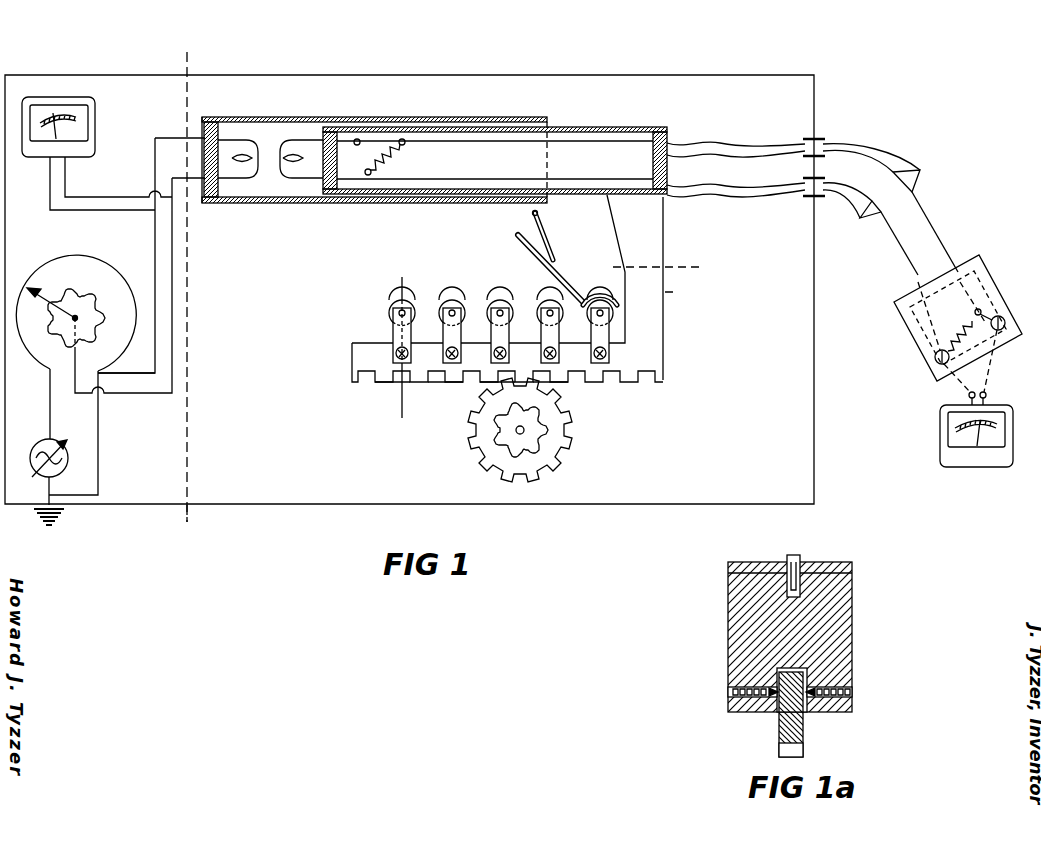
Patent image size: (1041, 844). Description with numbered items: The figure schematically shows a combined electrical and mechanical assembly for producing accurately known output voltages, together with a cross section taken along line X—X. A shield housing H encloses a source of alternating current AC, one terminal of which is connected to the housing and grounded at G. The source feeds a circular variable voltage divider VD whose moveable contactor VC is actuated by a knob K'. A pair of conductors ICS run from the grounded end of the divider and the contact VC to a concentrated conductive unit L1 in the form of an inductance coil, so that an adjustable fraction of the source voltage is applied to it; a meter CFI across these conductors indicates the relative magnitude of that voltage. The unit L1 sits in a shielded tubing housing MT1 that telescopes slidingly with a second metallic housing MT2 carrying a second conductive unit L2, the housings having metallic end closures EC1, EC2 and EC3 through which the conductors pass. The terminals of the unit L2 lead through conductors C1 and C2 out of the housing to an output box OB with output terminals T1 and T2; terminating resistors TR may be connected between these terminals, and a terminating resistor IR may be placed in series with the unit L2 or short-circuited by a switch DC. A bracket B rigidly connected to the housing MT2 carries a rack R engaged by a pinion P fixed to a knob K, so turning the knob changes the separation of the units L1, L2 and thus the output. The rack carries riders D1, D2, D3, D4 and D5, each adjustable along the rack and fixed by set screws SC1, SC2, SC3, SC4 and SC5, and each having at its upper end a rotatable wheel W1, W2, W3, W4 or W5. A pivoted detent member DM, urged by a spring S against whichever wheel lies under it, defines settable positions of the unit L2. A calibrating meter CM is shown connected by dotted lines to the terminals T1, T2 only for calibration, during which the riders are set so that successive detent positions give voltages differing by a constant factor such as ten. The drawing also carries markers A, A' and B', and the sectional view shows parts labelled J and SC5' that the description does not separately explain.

In FIG. 1, the shield housing H is at (352, 77).
In FIG. 1, the section line A is at (197, 283).
In FIG. 1, the section line A' is at (194, 519).
In FIG. 1, the meter CFI is at (42, 97).
In FIG. 1, the pair of conductors ICS is at (172, 229).
In FIG. 1, the variable voltage divider VD is at (75, 257).
In FIG. 1, the moveable contactor VC is at (74, 305).
In FIG. 1, the knob K' is at (78, 303).
In FIG. 1, the source of alternating current AC is at (37, 445).
In FIG. 1, the ground G is at (58, 513).
In FIG. 1, the shielded conductive housing MT1 is at (486, 118).
In FIG. 1, the metallic housing MT2 is at (592, 128).
In FIG. 1, the metallic end closure EC1 is at (203, 121).
In FIG. 1, the metallic end closure EC2 is at (343, 191).
In FIG. 1, the metallic end closure EC3 is at (670, 196).
In FIG. 1, the concentrated electrically conductive unit L1 is at (262, 186).
In FIG. 1, the second concentrated electrically conductive unit L2 is at (275, 186).
In FIG. 1, the switch DC is at (360, 154).
In FIG. 1, the terminating resistor IR is at (389, 157).
In FIG. 1, the spring S is at (547, 230).
In FIG. 1, the detent member DM is at (600, 293).
In FIG. 1, the bracket B is at (635, 288).
In FIG. 1, the bar section line B' is at (659, 258).
In FIG. 1, the rotatable wheel W1 is at (613, 314).
In FIG. 1A, the rotatable wheel W1 is at (801, 562).
In FIG. 1, the rotatable wheel W2 is at (548, 301).
In FIG. 1, the rotatable wheel W3 is at (494, 301).
In FIG. 1, the rotatable wheel W4 is at (448, 301).
In FIG. 1, the rotatable wheel W5 is at (393, 304).
In FIG. 1, the rider D1 is at (591, 337).
In FIG. 1A, the rider D1 is at (852, 634).
In FIG. 1, the rider D2 is at (541, 337).
In FIG. 1, the rider D3 is at (491, 337).
In FIG. 1, the rider D4 is at (443, 337).
In FIG. 1, the rider D5 is at (393, 337).
In FIG. 1, the set screw SC1 is at (603, 365).
In FIG. 1, the set screw SC2 is at (557, 365).
In FIG. 1, the set screw SC3 is at (493, 365).
In FIG. 1, the set screw SC4 is at (443, 365).
In FIG. 1, the set screw SC5 is at (355, 391).
In FIG. 1A, the set screw SC5 is at (858, 696).
In FIG. 1A, the spring contact 5 prime SC5' is at (714, 696).
In FIG. 1, the section line X— X is at (402, 346).
In FIG. 1, the pinion P is at (572, 448).
In FIG. 1, the knob K is at (503, 450).
In FIG. 1, the conductor C1 is at (826, 230).
In FIG. 1, the conductor C2 is at (803, 264).
In FIG. 1, the output box OB is at (994, 274).
In FIG. 1, the terminating resistor TR is at (1002, 330).
In FIG. 1, the output terminal T1 is at (1001, 332).
In FIG. 1, the output terminal T2 is at (935, 358).
In FIG. 1, the calibrating meter CM is at (940, 440).
In FIG. 1A, the jacket strip J is at (852, 574).
In FIG. 1A, the rack R is at (803, 733).